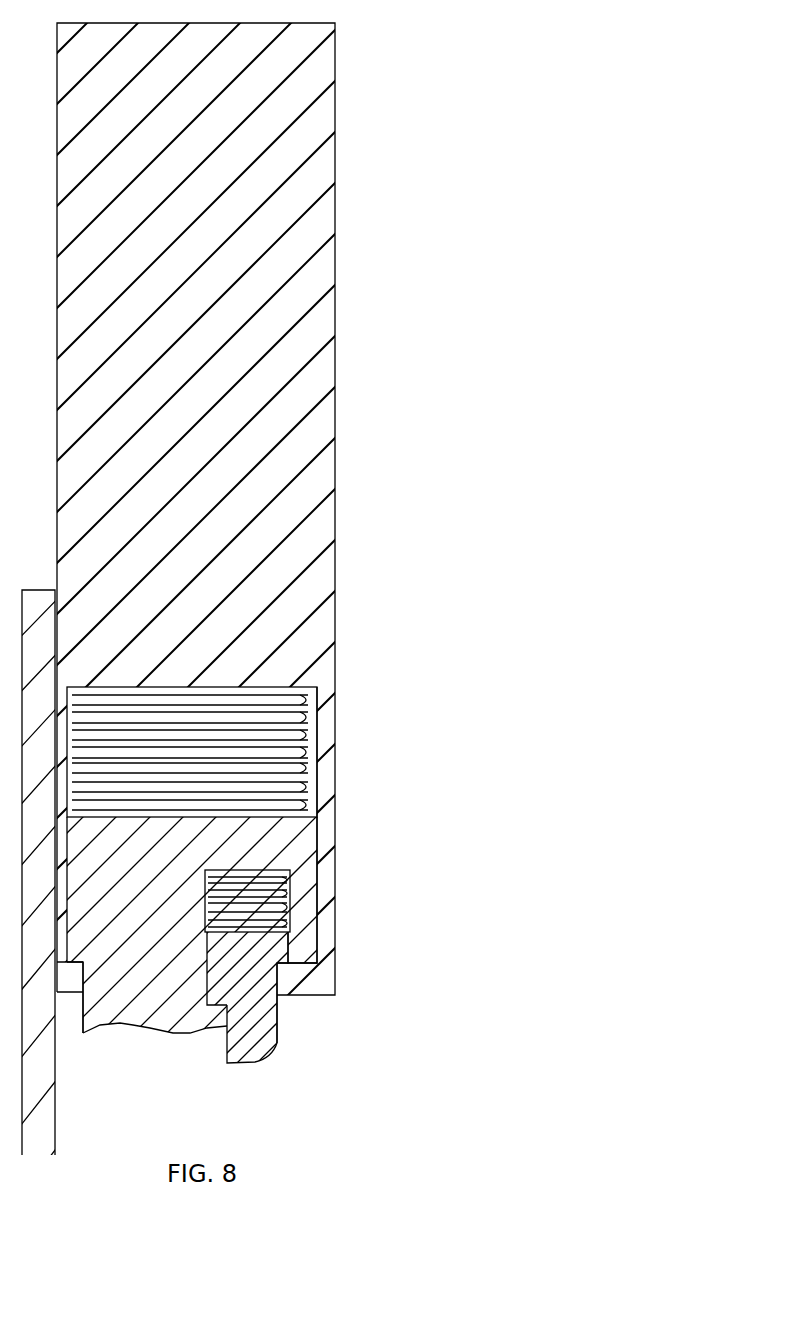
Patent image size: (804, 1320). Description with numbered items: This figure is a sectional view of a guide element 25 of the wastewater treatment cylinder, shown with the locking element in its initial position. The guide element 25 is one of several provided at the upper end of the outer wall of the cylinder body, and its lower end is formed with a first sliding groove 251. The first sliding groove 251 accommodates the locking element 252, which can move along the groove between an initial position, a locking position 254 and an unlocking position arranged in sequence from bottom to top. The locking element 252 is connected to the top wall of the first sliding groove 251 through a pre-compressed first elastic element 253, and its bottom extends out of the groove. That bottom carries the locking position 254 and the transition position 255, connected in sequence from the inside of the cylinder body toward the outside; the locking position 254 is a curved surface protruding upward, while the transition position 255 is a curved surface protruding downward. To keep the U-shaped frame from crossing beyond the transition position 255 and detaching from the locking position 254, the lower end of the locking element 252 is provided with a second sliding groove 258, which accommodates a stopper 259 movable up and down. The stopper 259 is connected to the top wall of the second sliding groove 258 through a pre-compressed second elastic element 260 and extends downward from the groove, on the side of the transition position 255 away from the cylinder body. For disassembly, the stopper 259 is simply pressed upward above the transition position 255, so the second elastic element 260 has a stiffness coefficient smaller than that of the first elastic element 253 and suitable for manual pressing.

The guide element 25 is at (332, 212).
The first sliding groove 251 is at (307, 797).
The locking element 252 is at (297, 840).
The first elastic element 253 is at (290, 713).
The locking position 254 is at (113, 1026).
The transition position 255 is at (187, 1033).
The second sliding groove 258 is at (289, 900).
The stopper 259 is at (277, 1017).
The second elastic element 260 is at (288, 870).